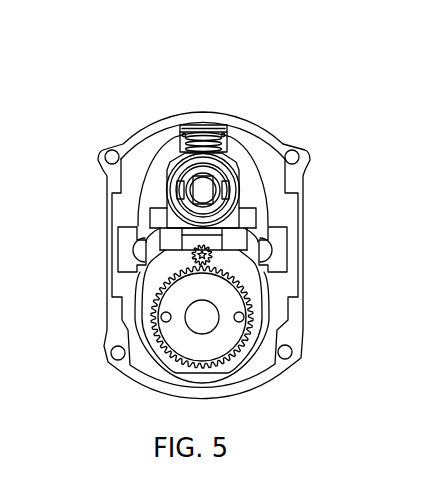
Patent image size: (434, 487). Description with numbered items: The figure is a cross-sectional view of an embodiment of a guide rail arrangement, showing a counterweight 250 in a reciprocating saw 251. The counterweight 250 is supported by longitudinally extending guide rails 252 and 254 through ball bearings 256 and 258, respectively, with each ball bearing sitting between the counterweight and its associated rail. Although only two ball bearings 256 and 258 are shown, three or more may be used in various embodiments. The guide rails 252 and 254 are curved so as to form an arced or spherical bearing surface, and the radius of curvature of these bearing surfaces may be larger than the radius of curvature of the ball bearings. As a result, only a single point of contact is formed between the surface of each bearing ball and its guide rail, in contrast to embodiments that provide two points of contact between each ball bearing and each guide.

The counterweight 250 is at (299, 349).
The reciprocating saw 251 is at (92, 80).
The guide rail 252 is at (128, 248).
The guide rail 254 is at (284, 240).
The ball bearing 256 is at (118, 266).
The ball bearing 258 is at (272, 240).